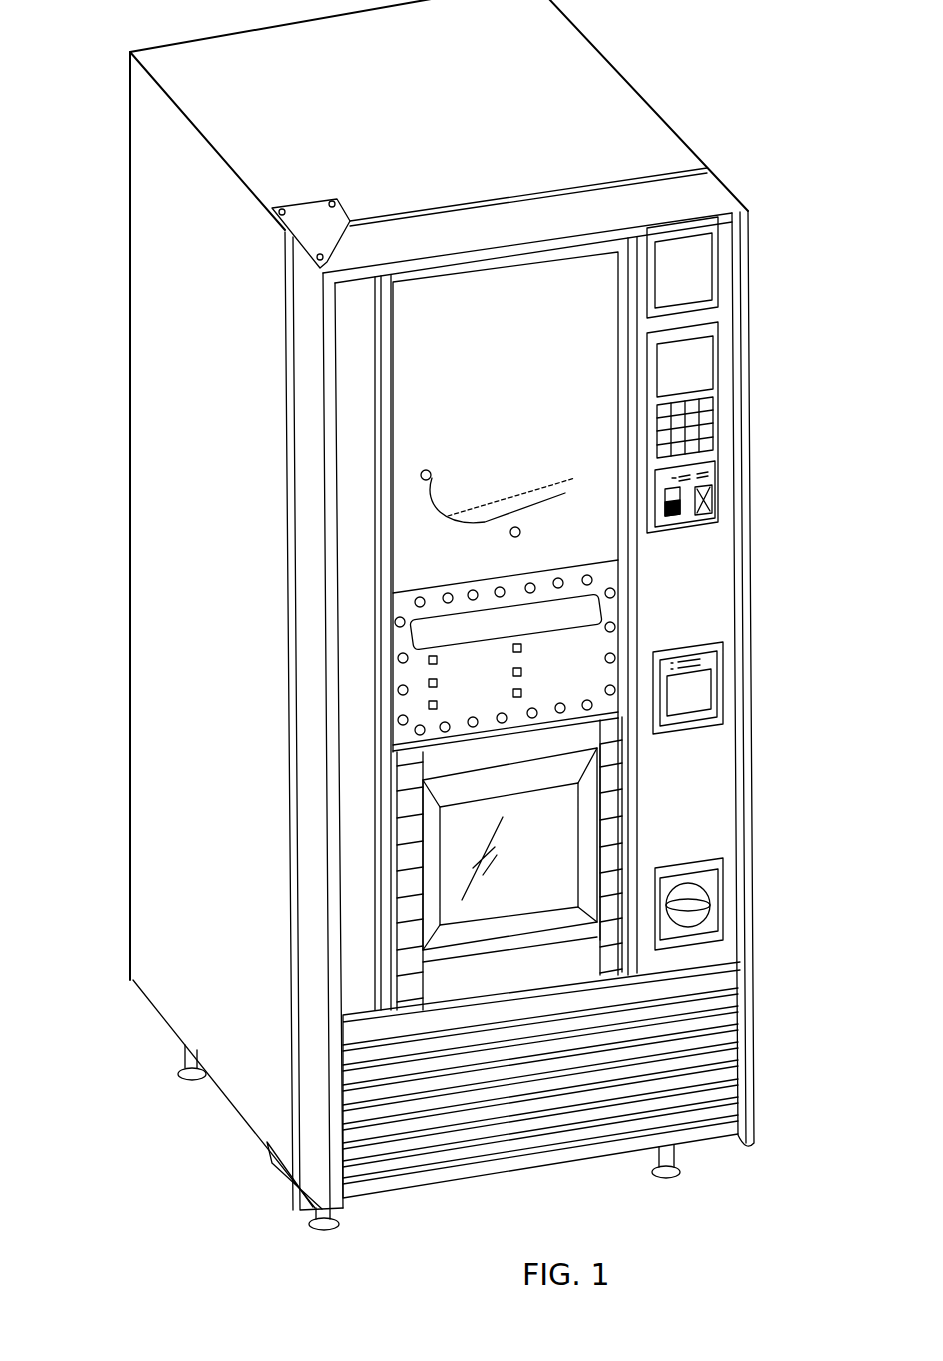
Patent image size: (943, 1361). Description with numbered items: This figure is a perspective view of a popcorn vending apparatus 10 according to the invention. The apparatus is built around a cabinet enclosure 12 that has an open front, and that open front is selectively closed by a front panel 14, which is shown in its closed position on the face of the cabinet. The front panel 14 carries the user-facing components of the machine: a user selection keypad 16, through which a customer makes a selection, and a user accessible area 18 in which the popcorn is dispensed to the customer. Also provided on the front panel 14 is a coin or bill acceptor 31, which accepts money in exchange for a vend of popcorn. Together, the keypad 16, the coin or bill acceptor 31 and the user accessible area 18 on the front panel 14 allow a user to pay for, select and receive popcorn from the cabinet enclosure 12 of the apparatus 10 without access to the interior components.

The popcorn vending apparatus 10 is at (616, 68).
The cabinet enclosure 12 is at (128, 130).
The front panel 14 is at (750, 242).
The user selection keypad 16 is at (717, 417).
The user accessible area 18 is at (573, 835).
The coin or bill acceptor 31 is at (712, 684).